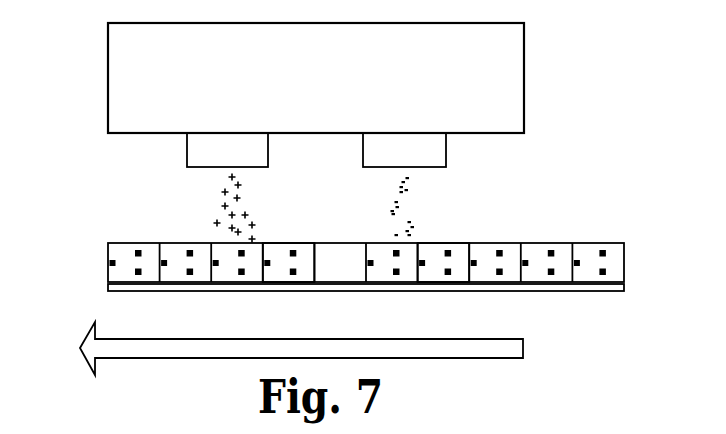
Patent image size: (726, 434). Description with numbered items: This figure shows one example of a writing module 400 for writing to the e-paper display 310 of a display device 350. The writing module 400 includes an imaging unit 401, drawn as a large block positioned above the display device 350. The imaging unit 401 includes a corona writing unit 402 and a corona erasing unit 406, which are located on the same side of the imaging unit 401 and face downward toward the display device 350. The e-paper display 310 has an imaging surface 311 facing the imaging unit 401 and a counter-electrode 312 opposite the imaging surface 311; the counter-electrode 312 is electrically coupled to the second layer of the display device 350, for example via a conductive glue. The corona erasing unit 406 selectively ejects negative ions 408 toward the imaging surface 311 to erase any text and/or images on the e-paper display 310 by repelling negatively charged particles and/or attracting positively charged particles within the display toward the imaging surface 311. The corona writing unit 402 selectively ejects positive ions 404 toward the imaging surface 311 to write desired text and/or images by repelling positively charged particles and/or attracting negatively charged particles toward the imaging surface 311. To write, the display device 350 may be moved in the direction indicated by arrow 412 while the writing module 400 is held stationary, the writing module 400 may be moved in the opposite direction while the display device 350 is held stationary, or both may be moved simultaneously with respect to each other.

The writing module 400 is at (353, 96).
The imaging unit 401 is at (512, 94).
The corona writing unit 402 is at (262, 148).
The positive ions 404 is at (238, 198).
The corona erasing unit 406 is at (438, 150).
The negative ions 408 is at (407, 211).
The display device 350 is at (366, 309).
The imaging surface 311 is at (294, 243).
The e-paper display 310 is at (432, 262).
The counter-electrode 312 is at (294, 290).
The arrow 412 is at (84, 361).